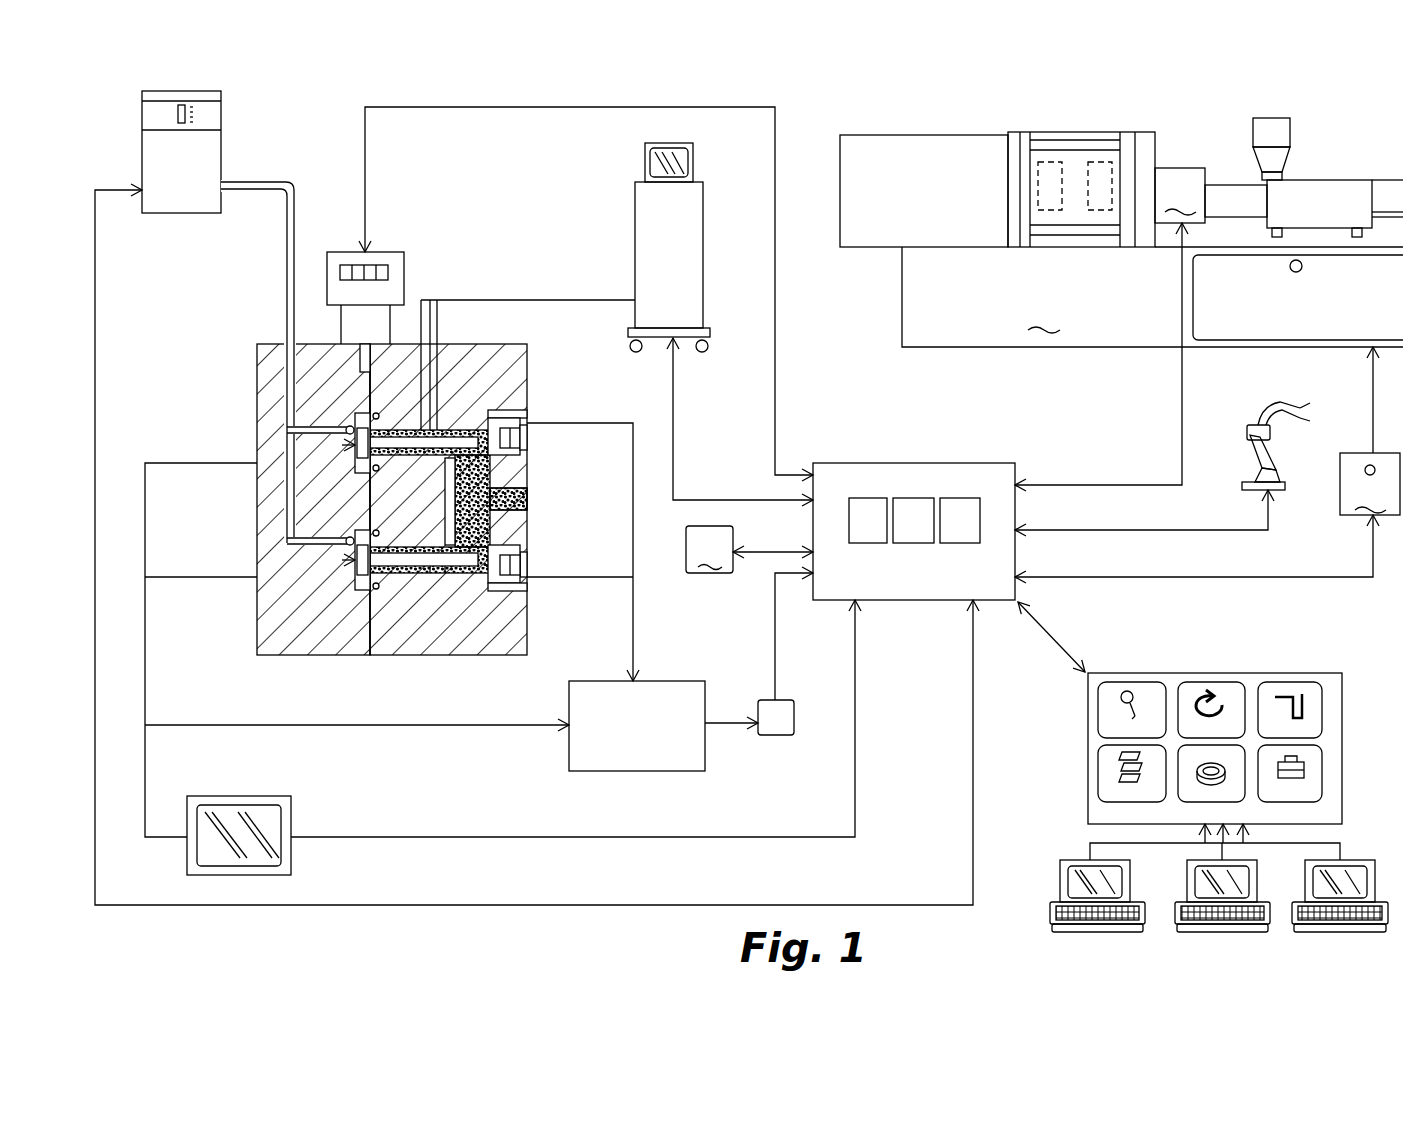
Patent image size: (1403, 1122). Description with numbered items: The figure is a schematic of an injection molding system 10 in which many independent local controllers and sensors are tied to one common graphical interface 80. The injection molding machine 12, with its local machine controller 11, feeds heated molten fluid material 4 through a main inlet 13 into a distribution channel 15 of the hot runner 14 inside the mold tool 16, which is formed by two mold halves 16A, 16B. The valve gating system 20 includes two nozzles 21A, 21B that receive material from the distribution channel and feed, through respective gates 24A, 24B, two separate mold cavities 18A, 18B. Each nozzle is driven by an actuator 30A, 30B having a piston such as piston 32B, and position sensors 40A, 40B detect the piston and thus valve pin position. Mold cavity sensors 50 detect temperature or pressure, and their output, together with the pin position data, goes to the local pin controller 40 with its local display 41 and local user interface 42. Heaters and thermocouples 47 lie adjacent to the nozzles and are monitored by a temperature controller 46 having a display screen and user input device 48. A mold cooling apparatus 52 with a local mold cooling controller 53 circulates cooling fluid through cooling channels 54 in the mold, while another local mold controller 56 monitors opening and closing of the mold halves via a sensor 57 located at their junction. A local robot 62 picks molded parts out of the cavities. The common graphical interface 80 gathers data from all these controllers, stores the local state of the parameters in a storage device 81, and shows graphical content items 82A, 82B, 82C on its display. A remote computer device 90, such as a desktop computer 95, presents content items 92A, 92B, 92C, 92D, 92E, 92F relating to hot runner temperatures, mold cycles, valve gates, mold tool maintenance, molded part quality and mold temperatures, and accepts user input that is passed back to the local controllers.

The heated molten fluid material 4 is at (530, 497).
The injection molding system 10 is at (1121, 213).
The local machine controller 11 is at (1207, 372).
The injection molding machine 12 is at (915, 120).
The main inlet 13 is at (518, 505).
The hot runner 14 is at (452, 437).
The distribution channel 15 is at (472, 460).
The mold tool 16 is at (648, 403).
The mold half 16A is at (305, 656).
The mold half 16B is at (449, 656).
The mold cavity 18A is at (320, 434).
The mold cavity 18B is at (320, 540).
The valve gating system 20 is at (518, 488).
The nozzle 21A is at (405, 350).
The nozzle 21B is at (371, 656).
The gate 24A is at (352, 425).
The gate 24B is at (352, 560).
The actuator 30A is at (505, 435).
The actuator 30B is at (512, 560).
The piston 32B is at (522, 440).
The local pin controller 40 is at (640, 771).
The position sensor 40A is at (500, 418).
The position sensor 40B is at (505, 590).
The local display 41 is at (293, 800).
The local user interface 42 is at (778, 736).
The temperature controller 46 is at (633, 228).
The heaters and thermocouples 47 is at (446, 575).
The display screen and user input device 48 is at (693, 153).
The mold cavity sensors 50 is at (340, 445).
The mold cooling apparatus 52 is at (230, 110).
The local mold cooling controller 53 is at (222, 128).
The cooling channels 54 is at (300, 405).
The local mold controller 56 is at (386, 250).
The sensor 57 is at (358, 362).
The local robot 62 is at (1250, 425).
The common graphical interface 80 is at (918, 600).
The storage device 81 is at (749, 549).
The graphical content item 82A is at (870, 543).
The graphical content item 82B is at (916, 543).
The graphical content item 82C is at (960, 543).
The remote computer device 90 is at (1345, 670).
The content item 92A is at (1112, 686).
The content item 92B is at (1240, 690).
The content item 92C is at (1312, 702).
The content item 92D is at (1322, 765).
The content item 92E is at (1238, 795).
The content item 92F is at (1108, 773).
The desktop computer 95 is at (1045, 893).